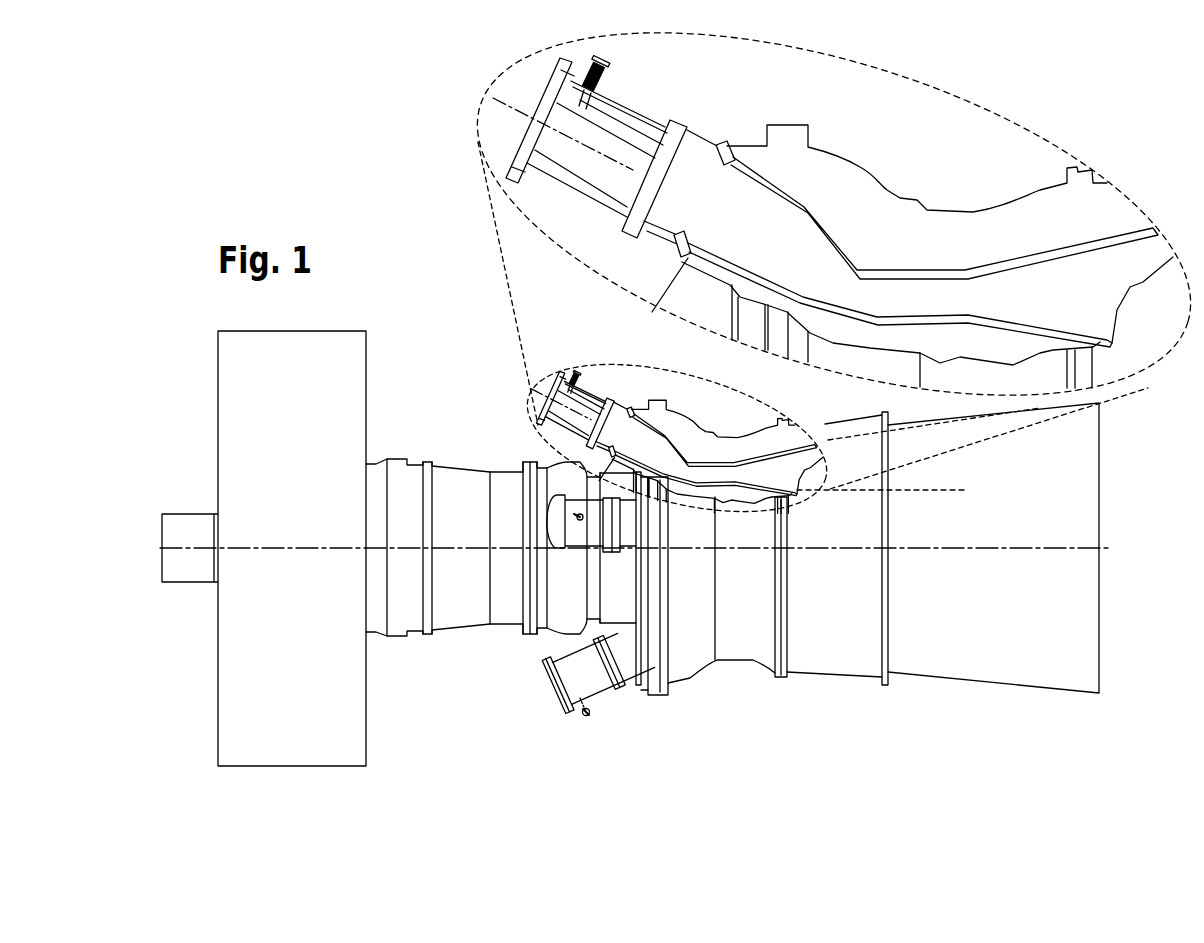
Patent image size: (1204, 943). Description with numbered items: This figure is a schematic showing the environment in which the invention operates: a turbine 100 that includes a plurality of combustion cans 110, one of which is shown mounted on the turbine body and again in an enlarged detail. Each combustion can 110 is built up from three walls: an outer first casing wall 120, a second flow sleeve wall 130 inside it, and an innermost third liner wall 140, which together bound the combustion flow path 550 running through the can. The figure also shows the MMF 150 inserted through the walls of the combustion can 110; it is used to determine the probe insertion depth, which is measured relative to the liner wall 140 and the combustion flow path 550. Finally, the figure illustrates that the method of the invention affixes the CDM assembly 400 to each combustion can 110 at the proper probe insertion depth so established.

The turbine 100 is at (393, 189).
The combustion can 110 is at (542, 680).
The first casing wall 120 is at (650, 118).
The second flow sleeve wall 130 is at (628, 125).
The third liner wall 140 is at (603, 110).
The MMF 150 is at (590, 58).
The CDM assembly 400 is at (582, 718).
The combustion flow path 550 is at (705, 210).